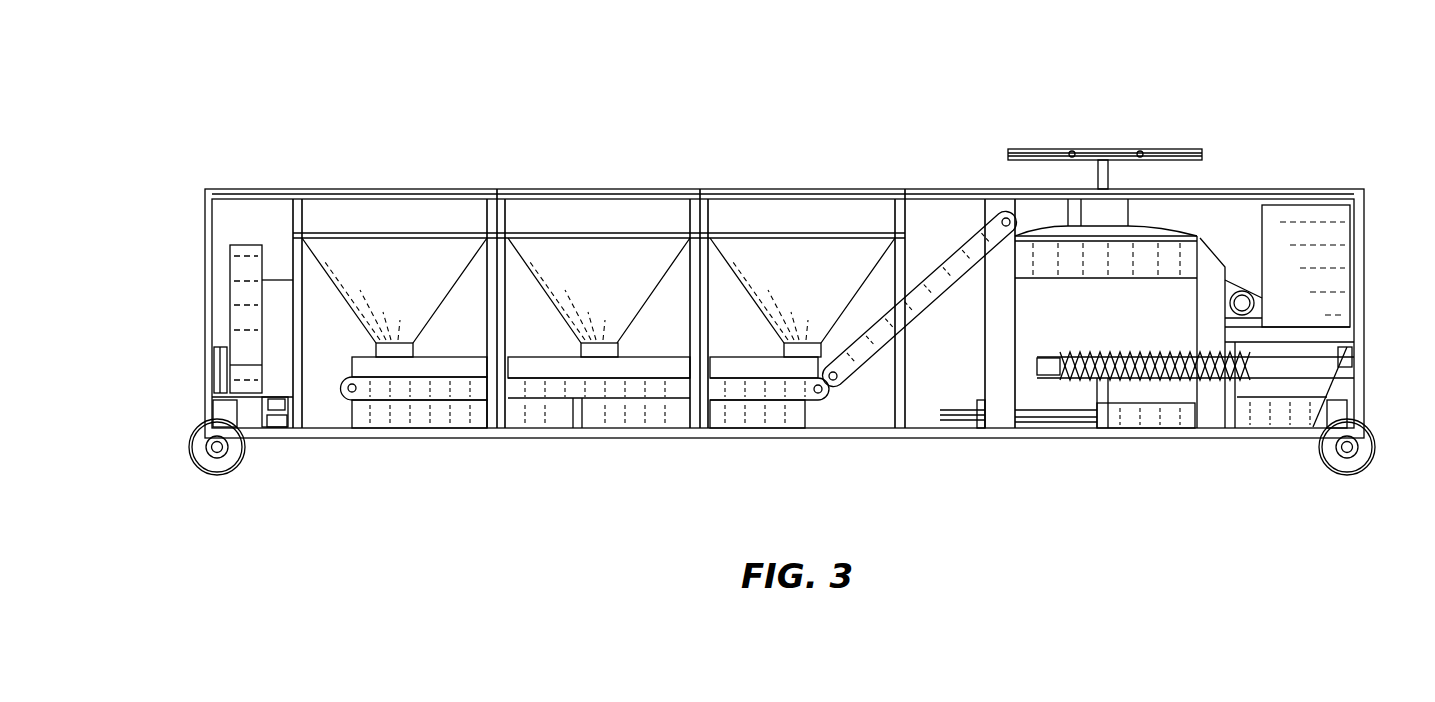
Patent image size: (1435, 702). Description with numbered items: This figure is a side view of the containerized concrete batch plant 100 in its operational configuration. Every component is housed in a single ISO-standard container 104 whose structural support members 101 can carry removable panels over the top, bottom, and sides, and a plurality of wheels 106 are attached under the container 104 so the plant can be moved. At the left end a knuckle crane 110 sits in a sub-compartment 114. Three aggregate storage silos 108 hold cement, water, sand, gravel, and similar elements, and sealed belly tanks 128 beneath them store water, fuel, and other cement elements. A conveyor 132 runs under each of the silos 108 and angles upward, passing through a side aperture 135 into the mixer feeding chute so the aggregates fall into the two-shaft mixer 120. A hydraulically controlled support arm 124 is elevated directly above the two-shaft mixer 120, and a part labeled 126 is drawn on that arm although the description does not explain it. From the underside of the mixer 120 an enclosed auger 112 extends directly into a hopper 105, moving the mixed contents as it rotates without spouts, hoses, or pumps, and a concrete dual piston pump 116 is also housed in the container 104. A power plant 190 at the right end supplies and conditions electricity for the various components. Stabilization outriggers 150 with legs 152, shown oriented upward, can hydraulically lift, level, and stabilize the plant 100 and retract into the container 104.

The feed delivery apparatus 100 is at (478, 88).
The frame 101 is at (472, 192).
The top panel 104 is at (270, 189).
The discharge chute 105 is at (1277, 392).
The wheels 106 is at (212, 462).
The hoppers 108 is at (385, 215).
The control unit 110 is at (238, 322).
The auger 112 is at (1138, 362).
The compartment 114 is at (240, 228).
The support base 116 is at (1168, 423).
The mixing chamber 120 is at (1168, 342).
The handle 124 is at (1160, 150).
The handle grip 126 is at (1072, 152).
The conveyor base 128 is at (398, 428).
The conveyor belt 132 is at (468, 400).
The pivot 135 is at (1012, 207).
The outlet 150 is at (1348, 412).
The actuator 152 is at (230, 373).
The storage box 190 is at (1312, 207).